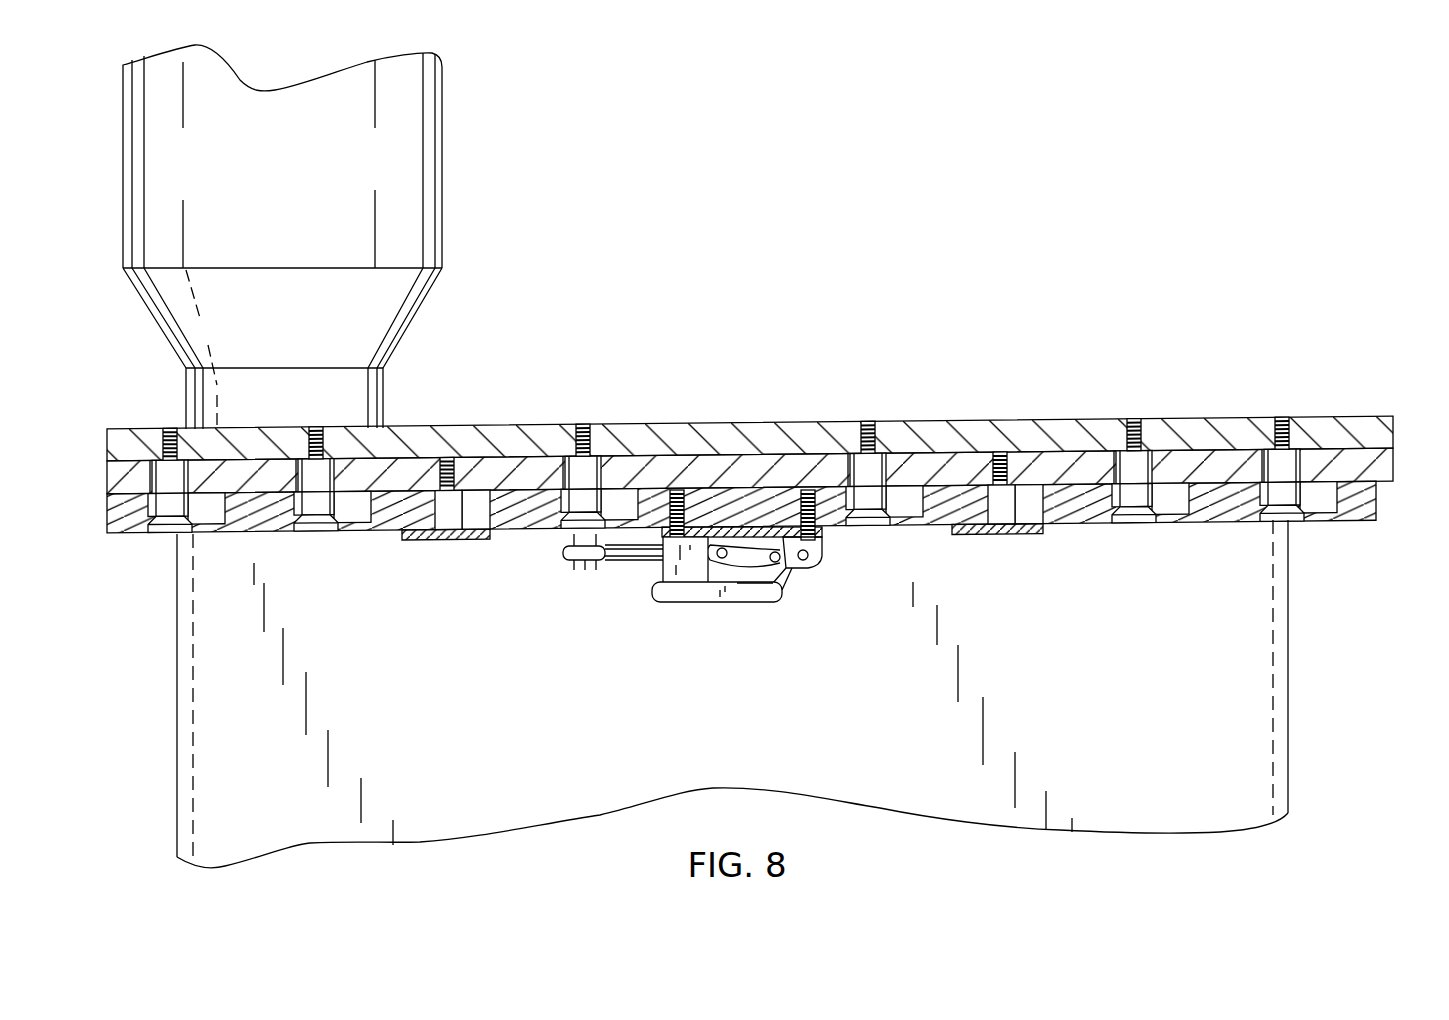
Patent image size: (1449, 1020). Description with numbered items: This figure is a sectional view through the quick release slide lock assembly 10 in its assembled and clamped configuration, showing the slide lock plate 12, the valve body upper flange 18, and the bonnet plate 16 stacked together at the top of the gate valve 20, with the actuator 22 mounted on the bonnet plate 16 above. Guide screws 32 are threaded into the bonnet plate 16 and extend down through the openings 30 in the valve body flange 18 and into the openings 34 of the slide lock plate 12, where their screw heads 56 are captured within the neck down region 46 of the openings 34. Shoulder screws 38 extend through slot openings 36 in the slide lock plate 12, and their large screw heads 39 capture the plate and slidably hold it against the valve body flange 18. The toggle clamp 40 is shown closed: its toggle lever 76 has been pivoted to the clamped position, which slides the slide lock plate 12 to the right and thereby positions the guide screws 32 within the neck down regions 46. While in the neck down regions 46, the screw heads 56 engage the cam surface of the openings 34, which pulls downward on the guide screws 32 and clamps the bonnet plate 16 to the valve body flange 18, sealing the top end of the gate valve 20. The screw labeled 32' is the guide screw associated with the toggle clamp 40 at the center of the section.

The quick release slide lock assembly 10 is at (1076, 342).
The slide lock plate 12 is at (1378, 506).
The bonnet plate 16 is at (1395, 428).
The valve body upper flange 18 is at (1395, 463).
The gate valve 20 is at (1290, 684).
The actuator 22 is at (415, 203).
The openings 30 is at (142, 431).
The guide screw 32 is at (741, 512).
The bolt 32' is at (568, 522).
The openings 34 is at (635, 497).
The slot openings 36 is at (485, 536).
The shoulder screw 38 is at (460, 545).
The screw head 39 is at (418, 546).
The latch mechanism 40 is at (790, 594).
The neck down region 46 is at (124, 540).
The screw head 56 is at (193, 580).
The toggle lever 76 is at (700, 602).